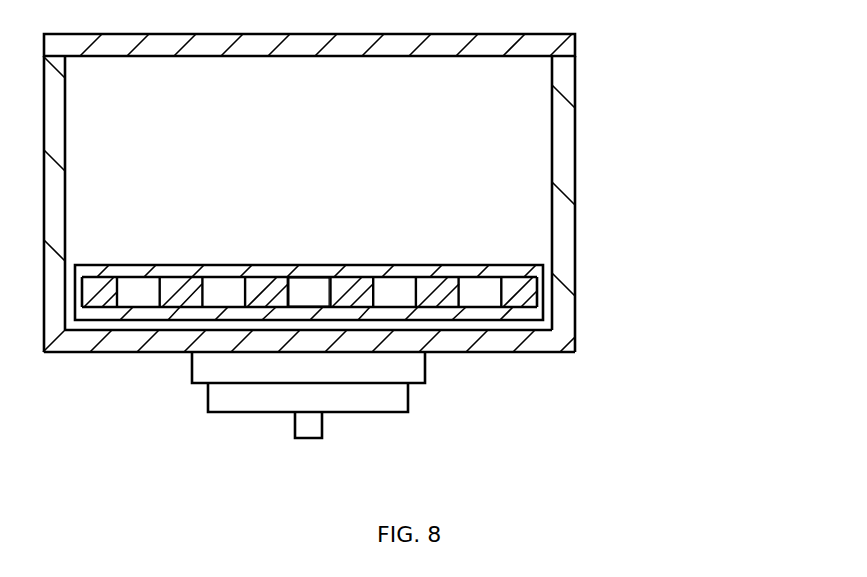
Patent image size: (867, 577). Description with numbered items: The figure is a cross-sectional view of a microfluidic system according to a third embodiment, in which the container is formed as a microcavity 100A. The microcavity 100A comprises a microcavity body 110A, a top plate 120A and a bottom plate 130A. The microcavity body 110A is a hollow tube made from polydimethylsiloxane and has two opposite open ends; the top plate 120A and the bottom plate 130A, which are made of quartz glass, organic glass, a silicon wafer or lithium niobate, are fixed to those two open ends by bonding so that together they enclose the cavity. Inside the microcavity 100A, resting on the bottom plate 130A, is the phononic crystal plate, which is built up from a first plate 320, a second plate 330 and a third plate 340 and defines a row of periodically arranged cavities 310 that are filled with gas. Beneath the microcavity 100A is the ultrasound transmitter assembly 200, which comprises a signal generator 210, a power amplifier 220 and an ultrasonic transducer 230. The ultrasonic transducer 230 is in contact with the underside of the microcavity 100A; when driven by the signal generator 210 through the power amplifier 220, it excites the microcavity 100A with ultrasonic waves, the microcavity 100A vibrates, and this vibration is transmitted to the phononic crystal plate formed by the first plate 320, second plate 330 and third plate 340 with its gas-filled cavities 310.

The microcavity 100A is at (692, 82).
The microcavity body 110A is at (558, 220).
The top plate 120A is at (558, 38).
The bottom plate 130A is at (545, 340).
The ultrasound transmitter assembly 200 is at (480, 383).
The signal generator 210 is at (310, 420).
The power amplifier 220 is at (372, 393).
The ultrasonic transducer 230 is at (393, 360).
The cavities 310 is at (312, 288).
The first plate 320 is at (437, 278).
The second plate 330 is at (250, 280).
The third plate 340 is at (115, 312).